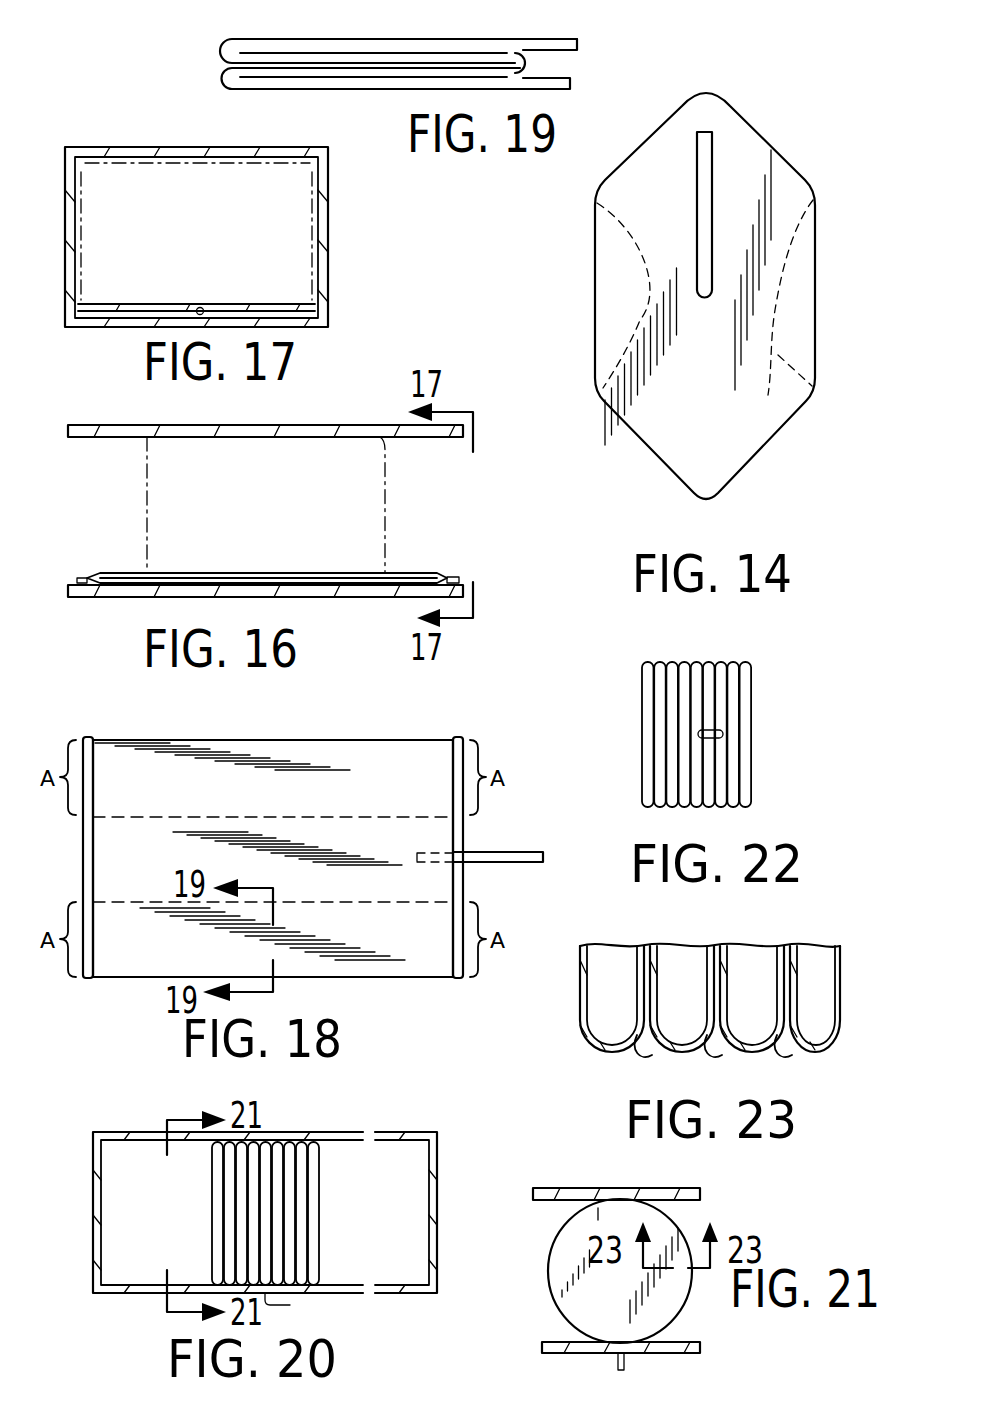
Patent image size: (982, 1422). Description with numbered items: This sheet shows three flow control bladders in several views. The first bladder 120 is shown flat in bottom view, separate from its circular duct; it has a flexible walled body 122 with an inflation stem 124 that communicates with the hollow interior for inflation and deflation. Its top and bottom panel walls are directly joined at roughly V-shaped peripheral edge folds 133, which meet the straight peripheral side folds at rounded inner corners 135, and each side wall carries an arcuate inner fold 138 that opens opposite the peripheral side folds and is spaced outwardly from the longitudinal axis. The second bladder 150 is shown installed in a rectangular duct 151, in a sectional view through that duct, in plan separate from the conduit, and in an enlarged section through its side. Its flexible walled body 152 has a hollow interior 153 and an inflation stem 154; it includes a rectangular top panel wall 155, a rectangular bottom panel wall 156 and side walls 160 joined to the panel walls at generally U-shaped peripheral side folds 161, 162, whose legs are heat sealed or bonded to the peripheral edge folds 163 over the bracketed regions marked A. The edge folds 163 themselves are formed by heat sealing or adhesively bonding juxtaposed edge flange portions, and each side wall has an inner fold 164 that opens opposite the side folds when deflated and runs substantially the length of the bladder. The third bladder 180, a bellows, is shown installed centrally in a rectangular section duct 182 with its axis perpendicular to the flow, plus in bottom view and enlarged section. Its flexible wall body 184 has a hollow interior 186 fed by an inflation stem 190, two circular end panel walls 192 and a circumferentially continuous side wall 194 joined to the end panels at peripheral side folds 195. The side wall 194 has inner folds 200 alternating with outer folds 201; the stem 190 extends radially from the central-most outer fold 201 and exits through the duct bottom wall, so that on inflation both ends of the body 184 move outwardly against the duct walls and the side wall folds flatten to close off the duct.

In FIG. 14, the flow control bladder 120 is at (625, 136).
In FIG. 14, the flexible walled body 122 is at (770, 116).
In FIG. 14, the inflation stem 124 is at (714, 190).
In FIG. 14, the peripheral edge folds 133 is at (661, 108).
In FIG. 14, the rounded inner corners 135 is at (596, 200).
In FIG. 14, the inner fold 138 is at (691, 297).
In FIG. 17, the flow control bladder 150 is at (279, 300).
In FIG. 16, the flow control bladder 150 is at (124, 560).
In FIG. 18, the flow control bladder 150 is at (422, 730).
In FIG. 17, the rectangular duct 151 is at (193, 147).
In FIG. 16, the rectangular duct 151 is at (256, 425).
In FIG. 16, the flexible walled body 152 is at (325, 565).
In FIG. 19, the hollow interior 153 is at (550, 63).
In FIG. 16, the inflation stem 154 is at (452, 576).
In FIG. 18, the inflation stem 154 is at (520, 852).
In FIG. 19, the rectangular top panel wall 155 is at (507, 39).
In FIG. 19, the rectangular bottom panel wall 156 is at (497, 90).
In FIG. 19, the side walls 160 is at (322, 73).
In FIG. 19, the peripheral side fold 161 is at (222, 52).
In FIG. 18, the peripheral side fold 161 is at (185, 706).
In FIG. 19, the peripheral side fold 162 is at (222, 79).
In FIG. 18, the peripheral side fold 162 is at (145, 1031).
In FIG. 16, the peripheral edge folds 163 is at (80, 580).
In FIG. 18, the peripheral edge folds 163 is at (85, 862).
In FIG. 19, the inner fold 164 is at (527, 82).
In FIG. 18, the inner fold 164 is at (370, 815).
In FIG. 22, the flow control bladder 180 is at (626, 762).
In FIG. 20, the flow control bladder 180 is at (338, 1197).
In FIG. 21, the flow control bladder 180 is at (540, 1313).
In FIG. 20, the rectangular section duct 182 is at (440, 1245).
In FIG. 21, the rectangular section duct 182 is at (690, 1353).
In FIG. 20, the flexible wall body 184 is at (200, 1226).
In FIG. 23, the hollow interior 186 is at (690, 962).
In FIG. 22, the inflation stem 190 is at (712, 731).
In FIG. 20, the inflation stem 190 is at (288, 1305).
In FIG. 21, the inflation stem 190 is at (618, 1366).
In FIG. 22, the circular end panel walls 192 is at (642, 697).
In FIG. 23, the circular end panel walls 192 is at (580, 990).
In FIG. 20, the circular end panel walls 192 is at (210, 1185).
In FIG. 21, the circular end panel walls 192 is at (662, 1226).
In FIG. 22, the circumferentially continuous side wall 194 is at (694, 660).
In FIG. 23, the circumferentially continuous side wall 194 is at (780, 1060).
In FIG. 22, the peripheral side folds 195 is at (650, 662).
In FIG. 23, the peripheral side folds 195 is at (597, 1057).
In FIG. 23, the inner folds 200 is at (795, 1000).
In FIG. 23, the outer folds 201 is at (735, 1058).